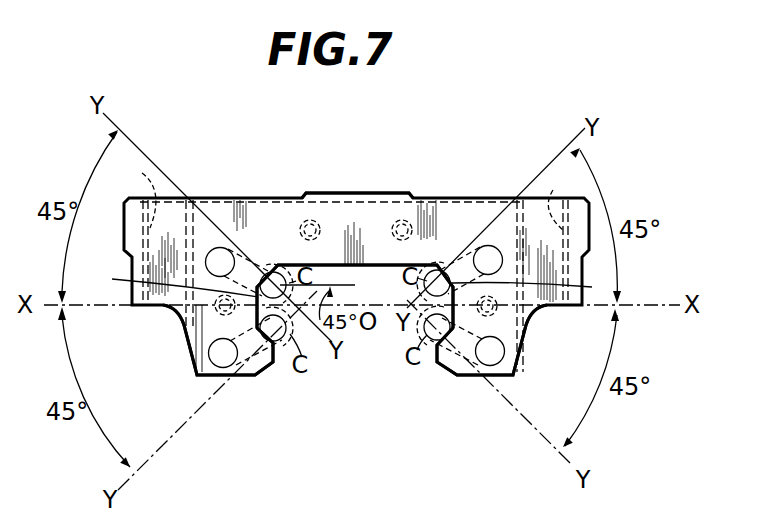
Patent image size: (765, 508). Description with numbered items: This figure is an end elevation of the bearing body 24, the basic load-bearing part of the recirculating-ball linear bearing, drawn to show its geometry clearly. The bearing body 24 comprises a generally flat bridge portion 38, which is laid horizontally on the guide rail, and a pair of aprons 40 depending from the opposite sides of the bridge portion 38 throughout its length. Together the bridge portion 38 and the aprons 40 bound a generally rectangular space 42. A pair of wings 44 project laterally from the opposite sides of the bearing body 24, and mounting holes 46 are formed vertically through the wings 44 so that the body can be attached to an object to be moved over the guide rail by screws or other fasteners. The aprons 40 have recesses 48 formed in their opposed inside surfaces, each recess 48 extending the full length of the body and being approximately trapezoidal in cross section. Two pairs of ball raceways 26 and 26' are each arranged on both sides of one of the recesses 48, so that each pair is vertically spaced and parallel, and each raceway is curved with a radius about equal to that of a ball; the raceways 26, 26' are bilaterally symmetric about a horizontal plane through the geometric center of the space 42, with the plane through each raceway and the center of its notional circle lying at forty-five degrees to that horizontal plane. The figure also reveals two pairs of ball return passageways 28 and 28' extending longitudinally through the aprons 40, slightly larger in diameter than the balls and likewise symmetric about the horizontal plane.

The bearing body 24 is at (510, 178).
The ball raceways 26 is at (270, 281).
The ball raceways 26' is at (453, 292).
The ball return passageways 28 is at (232, 286).
The ball return passageways 28' is at (501, 271).
The bridge portion 38 is at (363, 213).
The aprons 40 is at (210, 320).
The space 42 is at (392, 303).
The wings 44 is at (137, 238).
The mounting holes 46 is at (343, 192).
The recesses 48 is at (352, 279).